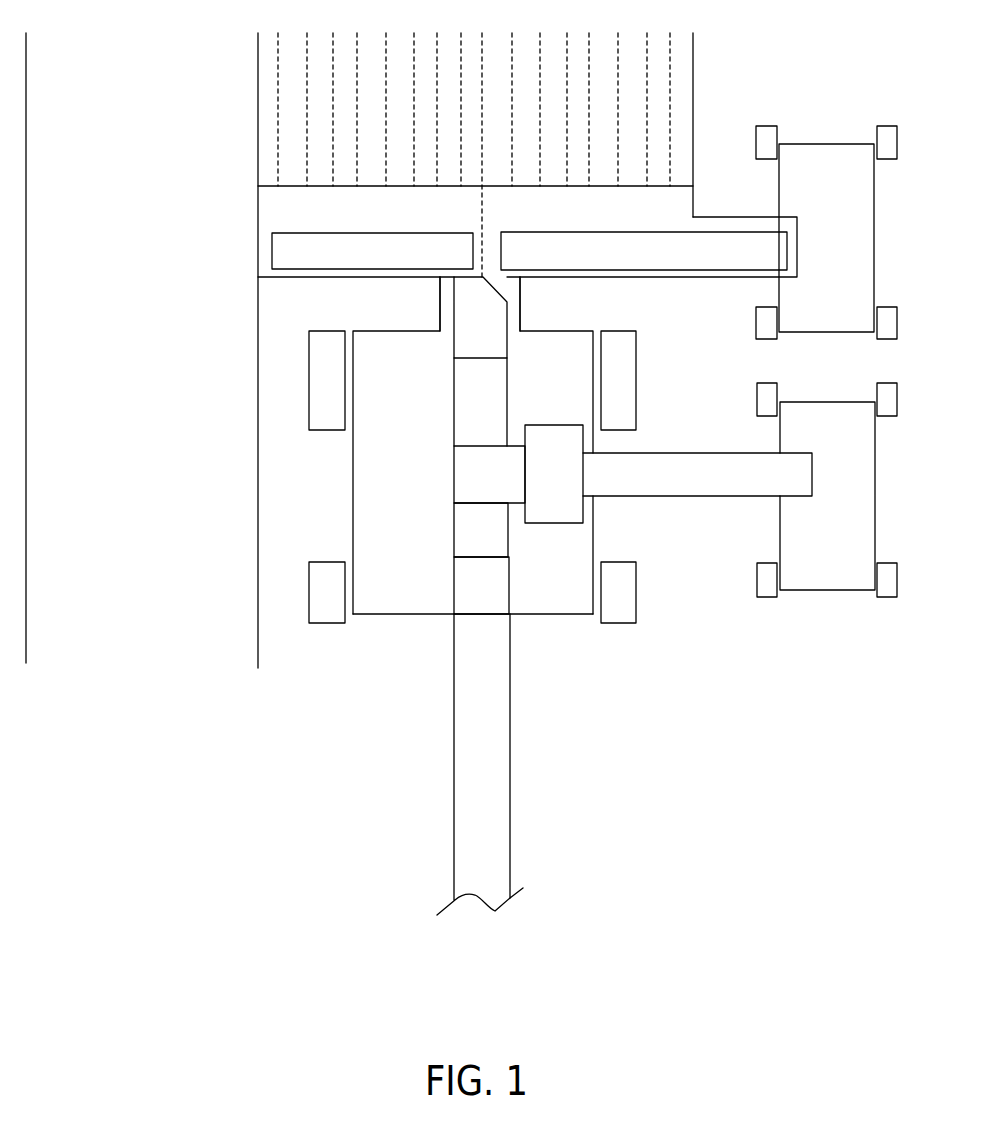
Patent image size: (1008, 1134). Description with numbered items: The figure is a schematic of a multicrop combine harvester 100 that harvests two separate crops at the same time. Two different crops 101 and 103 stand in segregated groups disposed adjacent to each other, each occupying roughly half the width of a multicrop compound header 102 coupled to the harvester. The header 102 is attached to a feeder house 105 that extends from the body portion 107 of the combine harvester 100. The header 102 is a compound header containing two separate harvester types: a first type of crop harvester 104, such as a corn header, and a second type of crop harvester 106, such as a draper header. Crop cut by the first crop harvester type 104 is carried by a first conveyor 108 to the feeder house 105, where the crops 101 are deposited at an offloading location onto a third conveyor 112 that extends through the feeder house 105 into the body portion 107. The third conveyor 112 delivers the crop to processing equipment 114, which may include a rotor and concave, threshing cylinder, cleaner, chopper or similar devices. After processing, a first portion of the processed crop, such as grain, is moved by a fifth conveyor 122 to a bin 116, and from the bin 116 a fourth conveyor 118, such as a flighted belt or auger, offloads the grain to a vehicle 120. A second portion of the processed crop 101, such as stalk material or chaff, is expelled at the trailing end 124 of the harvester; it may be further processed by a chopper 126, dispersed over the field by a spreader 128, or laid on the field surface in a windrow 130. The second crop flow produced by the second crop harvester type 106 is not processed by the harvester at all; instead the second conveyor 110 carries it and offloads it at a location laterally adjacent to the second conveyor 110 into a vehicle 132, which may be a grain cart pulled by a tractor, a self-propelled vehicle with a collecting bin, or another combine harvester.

The multicrop combine harvester 100 is at (410, 614).
The first crop 101 is at (383, 129).
The multicrop compound header 102 is at (344, 190).
The second crop 103 is at (128, 147).
The first type of crop harvester 104 is at (420, 225).
The feeder house 105 is at (440, 298).
The second type of crop harvester 106 is at (645, 223).
The body portion 107 is at (353, 484).
The first conveyor 108 is at (380, 262).
The second conveyor 110 is at (650, 262).
The third conveyor 112 is at (503, 340).
The processing equipment 114 is at (455, 392).
The bin 116 is at (577, 487).
The fourth conveyor 118 is at (707, 497).
The vehicle 120 is at (847, 543).
The fifth conveyor 122 is at (510, 487).
The trailing end 124 is at (512, 615).
The chopper 126 is at (454, 523).
The spreader 128 is at (454, 585).
The windrow 130 is at (455, 773).
The vehicle 132 is at (855, 223).